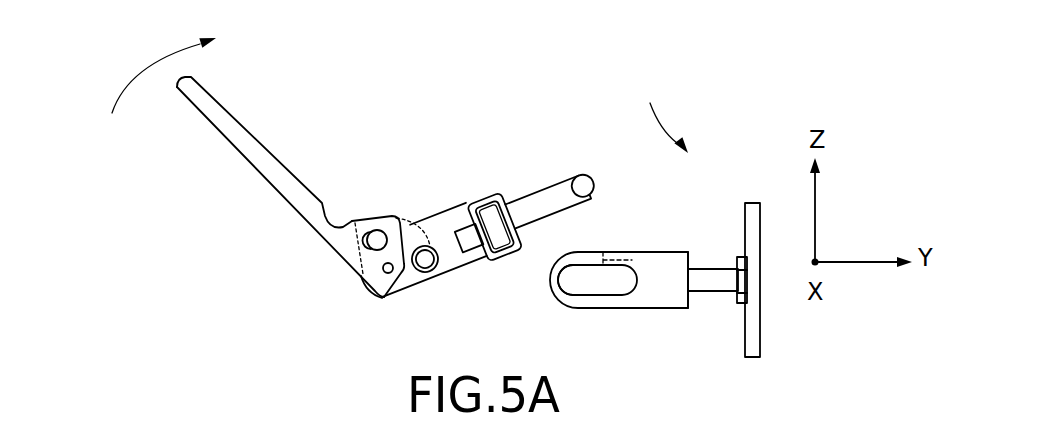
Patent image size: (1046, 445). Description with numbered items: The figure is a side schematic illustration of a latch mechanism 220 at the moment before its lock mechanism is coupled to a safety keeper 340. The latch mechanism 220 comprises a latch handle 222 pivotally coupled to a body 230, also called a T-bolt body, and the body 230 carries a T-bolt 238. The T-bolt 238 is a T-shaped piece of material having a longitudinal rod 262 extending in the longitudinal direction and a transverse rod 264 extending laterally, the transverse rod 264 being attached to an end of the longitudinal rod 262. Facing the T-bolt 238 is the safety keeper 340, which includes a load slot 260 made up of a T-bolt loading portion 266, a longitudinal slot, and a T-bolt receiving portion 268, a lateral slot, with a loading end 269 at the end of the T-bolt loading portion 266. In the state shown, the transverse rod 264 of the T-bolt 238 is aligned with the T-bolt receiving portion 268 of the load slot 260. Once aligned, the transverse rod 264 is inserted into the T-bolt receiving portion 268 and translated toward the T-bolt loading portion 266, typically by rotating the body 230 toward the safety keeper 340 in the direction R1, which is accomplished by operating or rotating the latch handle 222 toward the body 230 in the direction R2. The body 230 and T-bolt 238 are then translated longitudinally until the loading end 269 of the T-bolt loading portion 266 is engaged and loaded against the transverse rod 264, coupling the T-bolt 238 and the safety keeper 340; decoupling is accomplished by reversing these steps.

The latch mechanism 220 is at (393, 98).
The latch handle 222 is at (247, 168).
The body 230 is at (465, 205).
The T-bolt 238 is at (548, 188).
The longitudinal rod 262 is at (533, 195).
The transverse rod 264 is at (585, 174).
The T-bolt receiving portion 268 is at (618, 260).
The safety keeper 340 is at (650, 252).
The loading end 269 is at (553, 280).
The T-bolt loading portion 266 is at (597, 295).
The load slot 260 is at (627, 296).
The rotation of the body R1 is at (665, 118).
The rotation of the latch handle R2 is at (138, 82).